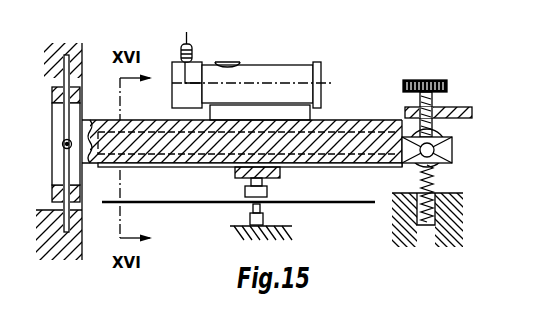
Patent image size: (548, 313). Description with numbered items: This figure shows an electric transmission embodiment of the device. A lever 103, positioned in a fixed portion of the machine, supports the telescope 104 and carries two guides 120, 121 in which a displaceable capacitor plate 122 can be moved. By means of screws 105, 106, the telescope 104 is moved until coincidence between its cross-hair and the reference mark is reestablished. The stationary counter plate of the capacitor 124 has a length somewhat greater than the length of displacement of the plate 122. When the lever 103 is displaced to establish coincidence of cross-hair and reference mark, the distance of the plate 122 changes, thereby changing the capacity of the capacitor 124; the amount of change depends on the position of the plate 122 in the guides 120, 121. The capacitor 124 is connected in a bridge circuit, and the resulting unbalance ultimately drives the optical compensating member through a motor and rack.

The lever 103 is at (341, 130).
The telescope 104 is at (256, 65).
The screw 105 is at (436, 80).
The screw 106 is at (453, 152).
The guide 120 is at (341, 168).
The guide 121 is at (173, 149).
The capacitor plate 122 is at (264, 193).
The capacitor 124 is at (358, 204).